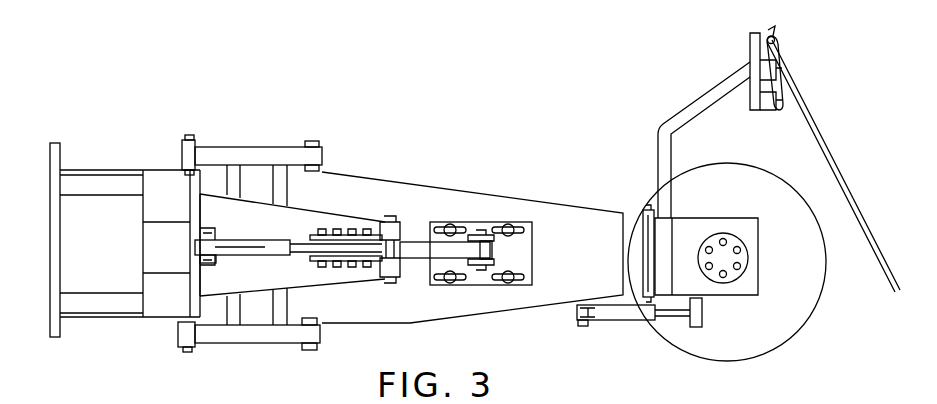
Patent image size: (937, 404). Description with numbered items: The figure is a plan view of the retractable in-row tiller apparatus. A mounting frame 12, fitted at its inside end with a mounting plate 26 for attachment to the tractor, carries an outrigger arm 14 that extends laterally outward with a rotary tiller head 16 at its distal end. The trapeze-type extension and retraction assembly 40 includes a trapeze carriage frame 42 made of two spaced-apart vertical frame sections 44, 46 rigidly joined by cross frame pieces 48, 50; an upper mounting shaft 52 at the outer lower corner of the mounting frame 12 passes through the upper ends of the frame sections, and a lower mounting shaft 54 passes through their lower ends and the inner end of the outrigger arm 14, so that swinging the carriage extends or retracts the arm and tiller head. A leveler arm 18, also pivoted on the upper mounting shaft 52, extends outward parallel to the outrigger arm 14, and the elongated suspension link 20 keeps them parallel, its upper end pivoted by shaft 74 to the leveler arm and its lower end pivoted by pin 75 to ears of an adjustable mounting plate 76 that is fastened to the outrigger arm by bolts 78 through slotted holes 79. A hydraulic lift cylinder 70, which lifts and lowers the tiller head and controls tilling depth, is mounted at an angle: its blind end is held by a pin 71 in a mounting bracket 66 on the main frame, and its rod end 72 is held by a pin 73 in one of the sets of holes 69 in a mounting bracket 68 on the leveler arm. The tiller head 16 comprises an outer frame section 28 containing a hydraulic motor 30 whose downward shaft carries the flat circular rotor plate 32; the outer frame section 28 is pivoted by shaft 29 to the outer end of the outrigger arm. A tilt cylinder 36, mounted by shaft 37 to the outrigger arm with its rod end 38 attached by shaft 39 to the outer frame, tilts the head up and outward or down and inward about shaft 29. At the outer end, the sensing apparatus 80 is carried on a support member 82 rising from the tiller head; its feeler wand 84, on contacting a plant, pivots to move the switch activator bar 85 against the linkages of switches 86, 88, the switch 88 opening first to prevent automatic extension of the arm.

The mounting frame 12 is at (130, 162).
The outrigger arm 14 is at (443, 180).
The rotary tiller head 16 is at (807, 325).
The leveler arm 18 is at (300, 212).
The suspension link 20 is at (392, 240).
The mounting plate 26 is at (50, 253).
The outer frame section 28 is at (712, 218).
The shaft 29 is at (647, 205).
The hydraulic motor 30 is at (749, 258).
The rotor plate 32 is at (826, 262).
The tilt cylinder 36 is at (620, 322).
The shaft 37 is at (585, 327).
The rod end 38 is at (670, 322).
The shaft 39 is at (697, 328).
The extension and retraction assembly 40 is at (266, 143).
The trapeze carriage frame 42 is at (250, 346).
The vertical frame section 44 is at (190, 336).
The vertical frame section 46 is at (232, 168).
The cross frame piece 48 is at (208, 122).
The cross frame piece 50 is at (330, 175).
The upper mounting shaft 52 is at (188, 353).
The lower mounting shaft 54 is at (312, 352).
The mounting bracket 66 is at (200, 228).
The mounting bracket 68 is at (352, 230).
The holes 69 is at (367, 268).
The hydraulic lift cylinder 70 is at (250, 240).
The pin 71 is at (212, 265).
The rod end 72 is at (297, 240).
The pin 73 is at (330, 262).
The shaft 74 is at (392, 278).
The shaft 75 is at (481, 230).
The adjustable mounting plate 76 is at (520, 222).
The bolts 78 is at (533, 241).
The slotted holes 79 is at (533, 270).
The sensing apparatus 80 is at (808, 100).
The bar 82 is at (668, 120).
The feeler wand 84 is at (838, 152).
The switch activator bar 85 is at (781, 68).
The switch 86 is at (750, 56).
The switch 88 is at (757, 111).